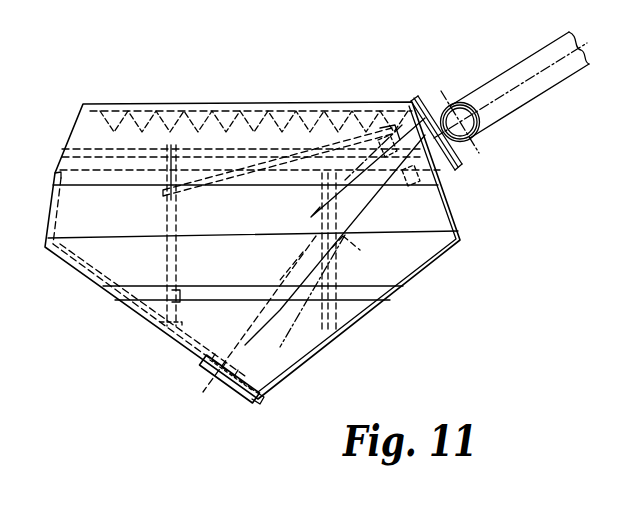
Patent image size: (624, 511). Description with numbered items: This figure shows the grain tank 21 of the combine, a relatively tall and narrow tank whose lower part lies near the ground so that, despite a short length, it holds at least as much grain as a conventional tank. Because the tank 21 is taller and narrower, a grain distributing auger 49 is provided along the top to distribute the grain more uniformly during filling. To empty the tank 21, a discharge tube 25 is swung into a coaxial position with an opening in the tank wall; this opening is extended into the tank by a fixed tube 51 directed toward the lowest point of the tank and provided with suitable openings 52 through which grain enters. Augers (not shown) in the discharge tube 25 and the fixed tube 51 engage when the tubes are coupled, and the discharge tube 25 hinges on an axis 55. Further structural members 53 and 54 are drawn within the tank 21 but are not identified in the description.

The grain tank 21 is at (79, 262).
The discharge tube 25 is at (553, 43).
The grain distributing auger 49 is at (214, 121).
The fixed tube 51 is at (383, 213).
The openings 52 is at (207, 352).
The angled member 53 is at (277, 165).
The post 54 is at (200, 308).
The axis 55 is at (424, 110).